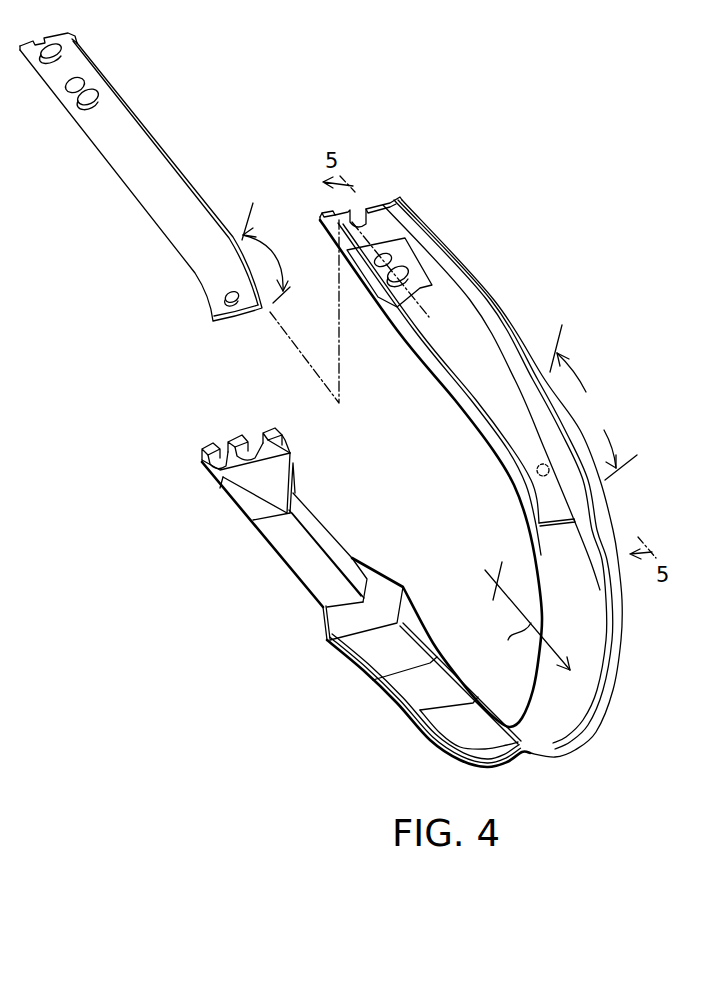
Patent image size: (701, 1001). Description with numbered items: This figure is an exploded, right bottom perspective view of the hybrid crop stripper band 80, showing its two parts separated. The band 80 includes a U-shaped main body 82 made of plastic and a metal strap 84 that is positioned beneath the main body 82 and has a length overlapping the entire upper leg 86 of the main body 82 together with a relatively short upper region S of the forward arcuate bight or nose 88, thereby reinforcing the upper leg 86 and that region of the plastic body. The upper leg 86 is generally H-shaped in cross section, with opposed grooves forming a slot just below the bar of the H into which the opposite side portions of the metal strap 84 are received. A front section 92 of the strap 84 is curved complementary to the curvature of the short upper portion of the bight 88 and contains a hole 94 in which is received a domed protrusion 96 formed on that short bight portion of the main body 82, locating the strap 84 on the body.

The hybrid crop stripper band 80 is at (421, 470).
The U-shaped main body 82 is at (421, 501).
The metal strap 84 is at (209, 184).
The upper leg 86 is at (492, 290).
The forward arcuate bight or nose 88 is at (597, 734).
The front section 92 is at (269, 254).
The hole 94 is at (213, 312).
The domed protrusion 96 is at (538, 478).